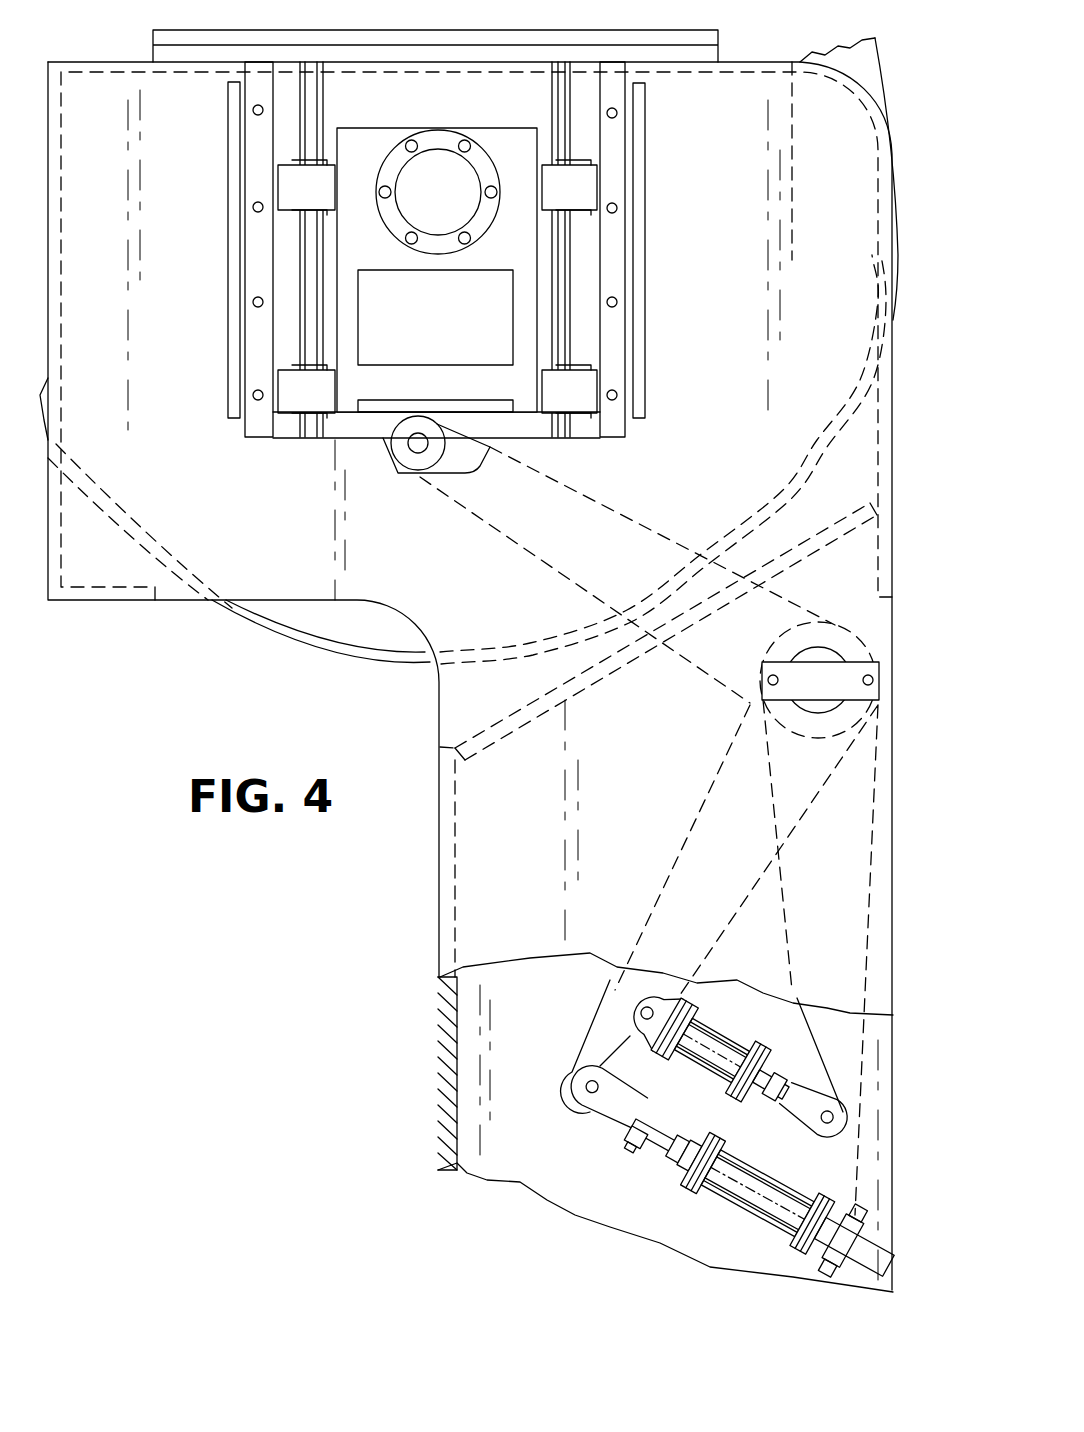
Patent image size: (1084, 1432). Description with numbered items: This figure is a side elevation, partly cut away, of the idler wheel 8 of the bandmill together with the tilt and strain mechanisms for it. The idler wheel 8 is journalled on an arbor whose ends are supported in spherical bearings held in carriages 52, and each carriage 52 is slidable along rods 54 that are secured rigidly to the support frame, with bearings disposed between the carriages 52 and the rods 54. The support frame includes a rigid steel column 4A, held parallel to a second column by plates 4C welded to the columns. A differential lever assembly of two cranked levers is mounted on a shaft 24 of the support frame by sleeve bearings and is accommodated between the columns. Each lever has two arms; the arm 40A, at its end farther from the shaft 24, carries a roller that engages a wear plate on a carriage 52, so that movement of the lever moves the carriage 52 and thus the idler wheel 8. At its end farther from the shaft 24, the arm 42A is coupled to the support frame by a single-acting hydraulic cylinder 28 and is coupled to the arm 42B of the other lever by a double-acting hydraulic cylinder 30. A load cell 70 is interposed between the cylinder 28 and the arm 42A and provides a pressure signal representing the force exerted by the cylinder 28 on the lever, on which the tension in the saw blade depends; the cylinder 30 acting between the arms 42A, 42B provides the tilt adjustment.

The column 4A is at (868, 413).
The plates 4C is at (90, 597).
The idler wheel 8 is at (310, 640).
The shaft 24 is at (840, 640).
The single-acting hydraulic cylinder 28 is at (728, 1177).
The double-acting hydraulic cylinder 30 is at (712, 1080).
The arm 40A is at (685, 537).
The arm 42A is at (680, 833).
The arm 42B is at (792, 987).
The carriage 52 is at (362, 127).
The rods 54 is at (322, 118).
The load cell 70 is at (655, 1148).